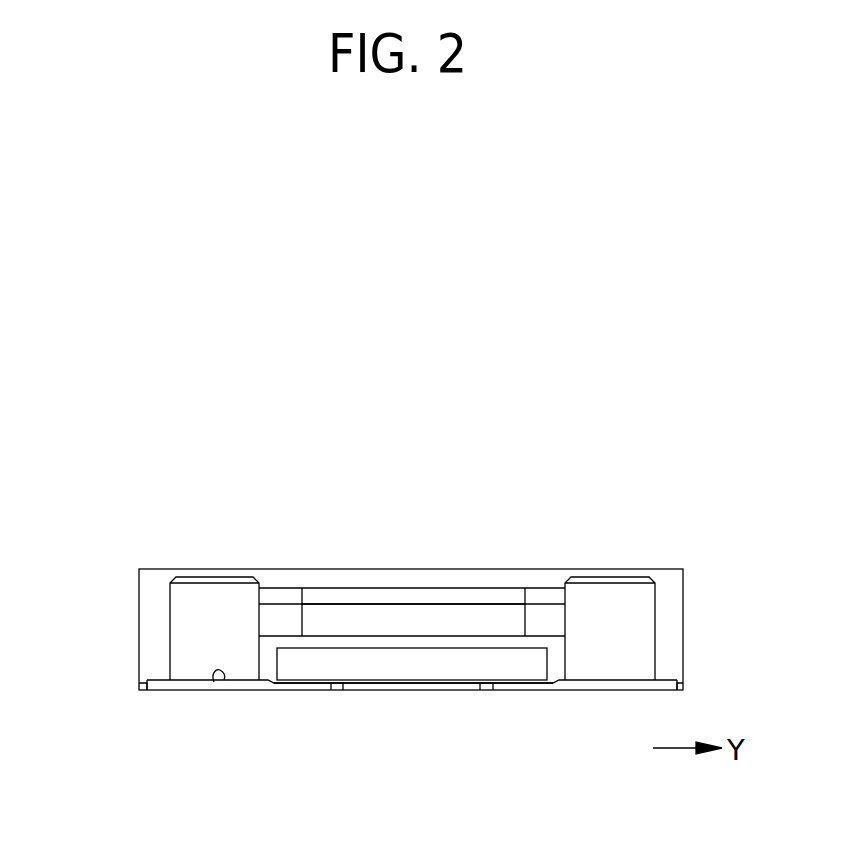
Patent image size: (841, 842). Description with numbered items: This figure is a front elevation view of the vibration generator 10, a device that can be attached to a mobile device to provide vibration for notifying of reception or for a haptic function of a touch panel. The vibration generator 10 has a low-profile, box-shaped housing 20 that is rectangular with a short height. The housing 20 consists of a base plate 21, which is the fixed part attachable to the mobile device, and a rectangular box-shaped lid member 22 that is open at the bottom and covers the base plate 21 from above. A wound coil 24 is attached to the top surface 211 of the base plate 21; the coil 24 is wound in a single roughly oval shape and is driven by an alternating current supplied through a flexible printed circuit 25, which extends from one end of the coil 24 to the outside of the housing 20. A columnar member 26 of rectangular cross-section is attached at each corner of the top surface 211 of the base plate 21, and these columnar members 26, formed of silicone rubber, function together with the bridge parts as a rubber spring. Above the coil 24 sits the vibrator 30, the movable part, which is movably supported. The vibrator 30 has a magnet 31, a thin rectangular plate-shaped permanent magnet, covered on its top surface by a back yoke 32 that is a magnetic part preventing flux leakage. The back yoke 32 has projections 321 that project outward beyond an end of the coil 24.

The vibration generator 10 is at (355, 578).
The housing 20 is at (352, 721).
The base plate 21 is at (180, 693).
The top surface 211 is at (214, 682).
The lid member 22 is at (134, 621).
The coil 24 is at (512, 668).
The flexible printed circuit 25 is at (398, 687).
The columnar member 26 is at (207, 590).
The vibrator 30 is at (404, 552).
The magnet 31 is at (330, 610).
The back yoke 32 is at (404, 573).
The projection 321 is at (476, 597).